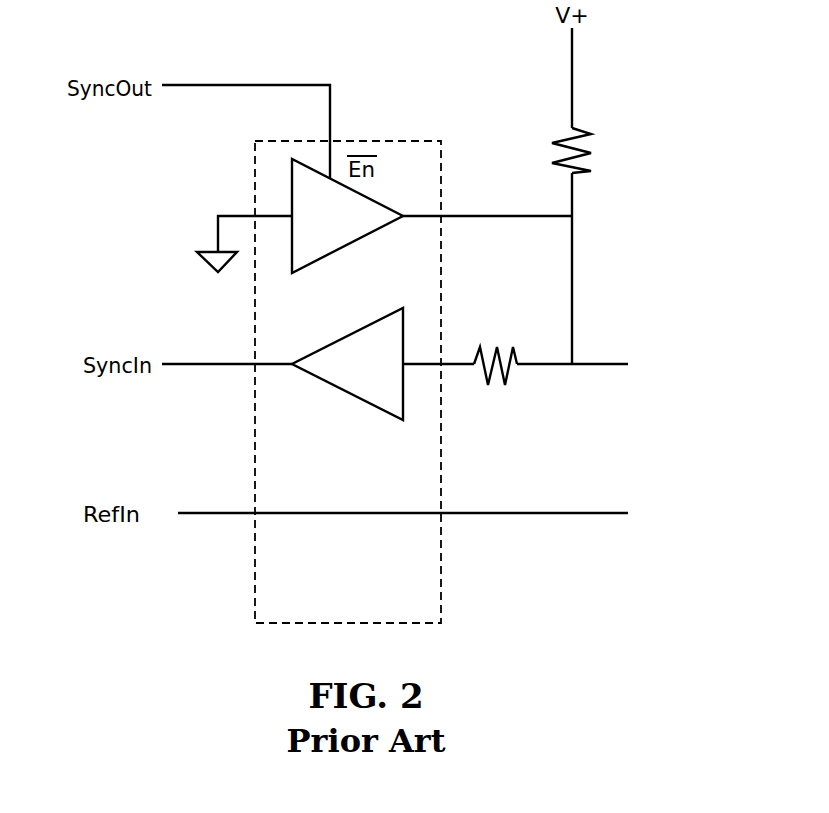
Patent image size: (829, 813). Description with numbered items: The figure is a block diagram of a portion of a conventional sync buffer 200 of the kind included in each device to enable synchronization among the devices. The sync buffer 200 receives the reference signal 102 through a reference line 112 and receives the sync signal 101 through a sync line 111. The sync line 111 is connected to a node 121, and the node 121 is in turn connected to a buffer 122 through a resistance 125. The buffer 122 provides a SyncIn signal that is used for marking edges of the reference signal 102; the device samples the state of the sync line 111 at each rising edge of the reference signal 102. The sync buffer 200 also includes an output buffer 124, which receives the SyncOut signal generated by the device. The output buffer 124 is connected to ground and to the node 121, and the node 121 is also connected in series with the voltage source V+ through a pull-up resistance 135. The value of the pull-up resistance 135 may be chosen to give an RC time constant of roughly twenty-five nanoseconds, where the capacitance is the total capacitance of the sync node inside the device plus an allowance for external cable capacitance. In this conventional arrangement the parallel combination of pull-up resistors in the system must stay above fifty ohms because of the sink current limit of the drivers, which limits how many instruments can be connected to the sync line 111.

The sync buffer 200 is at (348, 322).
The output buffer 124 is at (347, 216).
The buffer 122 is at (347, 364).
The pull-up resistance 135 is at (596, 150).
The resistance 125 is at (495, 352).
The sync line 111 is at (597, 268).
The node 121 is at (550, 379).
The sync signal 101 is at (633, 369).
The reference line 112 is at (400, 499).
The reference signal 102 is at (637, 515).